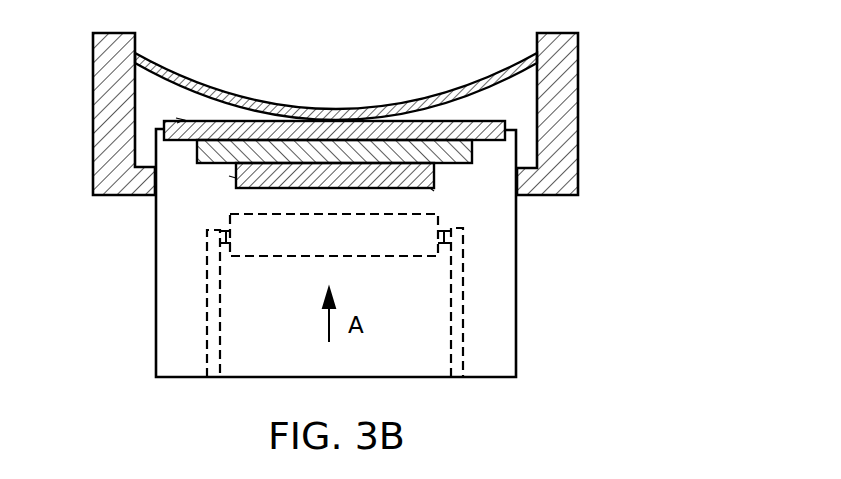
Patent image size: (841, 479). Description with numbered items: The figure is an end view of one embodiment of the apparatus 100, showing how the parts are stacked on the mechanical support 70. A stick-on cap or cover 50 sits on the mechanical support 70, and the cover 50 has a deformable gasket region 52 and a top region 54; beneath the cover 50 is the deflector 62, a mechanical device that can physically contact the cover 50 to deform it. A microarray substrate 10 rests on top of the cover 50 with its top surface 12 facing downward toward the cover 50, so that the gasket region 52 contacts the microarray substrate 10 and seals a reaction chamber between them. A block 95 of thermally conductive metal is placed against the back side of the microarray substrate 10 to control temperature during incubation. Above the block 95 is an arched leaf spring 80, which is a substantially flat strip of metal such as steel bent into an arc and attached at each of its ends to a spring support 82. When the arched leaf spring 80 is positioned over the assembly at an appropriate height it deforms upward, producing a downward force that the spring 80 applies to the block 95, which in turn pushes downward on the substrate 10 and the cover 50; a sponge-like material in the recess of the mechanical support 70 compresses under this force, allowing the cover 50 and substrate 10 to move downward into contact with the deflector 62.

The apparatus 100 is at (755, 152).
The spring support 82 is at (102, 83).
The arched leaf spring 80 is at (163, 68).
The block 95 is at (182, 119).
The microarray substrate 10 is at (473, 155).
The top surface 12 is at (436, 167).
The cover 50 is at (428, 190).
The gasket region 52 is at (229, 178).
The top region 54 is at (430, 191).
The mechanical support 70 is at (178, 243).
The deflector 62 is at (403, 245).